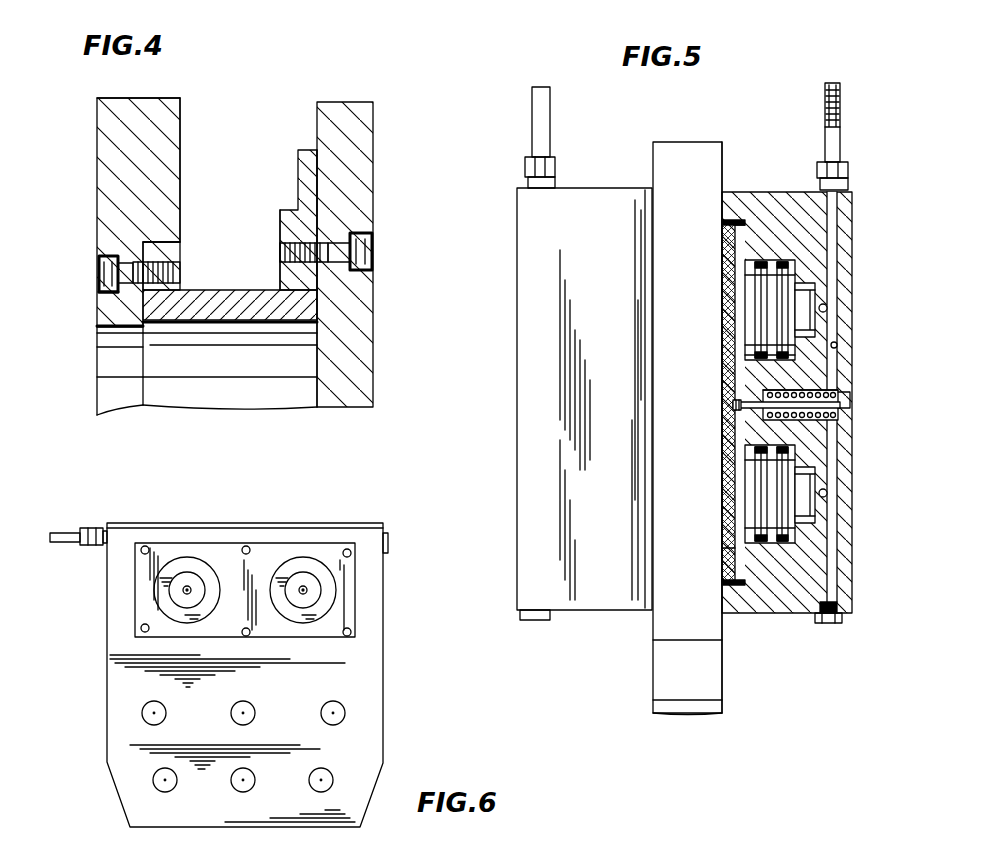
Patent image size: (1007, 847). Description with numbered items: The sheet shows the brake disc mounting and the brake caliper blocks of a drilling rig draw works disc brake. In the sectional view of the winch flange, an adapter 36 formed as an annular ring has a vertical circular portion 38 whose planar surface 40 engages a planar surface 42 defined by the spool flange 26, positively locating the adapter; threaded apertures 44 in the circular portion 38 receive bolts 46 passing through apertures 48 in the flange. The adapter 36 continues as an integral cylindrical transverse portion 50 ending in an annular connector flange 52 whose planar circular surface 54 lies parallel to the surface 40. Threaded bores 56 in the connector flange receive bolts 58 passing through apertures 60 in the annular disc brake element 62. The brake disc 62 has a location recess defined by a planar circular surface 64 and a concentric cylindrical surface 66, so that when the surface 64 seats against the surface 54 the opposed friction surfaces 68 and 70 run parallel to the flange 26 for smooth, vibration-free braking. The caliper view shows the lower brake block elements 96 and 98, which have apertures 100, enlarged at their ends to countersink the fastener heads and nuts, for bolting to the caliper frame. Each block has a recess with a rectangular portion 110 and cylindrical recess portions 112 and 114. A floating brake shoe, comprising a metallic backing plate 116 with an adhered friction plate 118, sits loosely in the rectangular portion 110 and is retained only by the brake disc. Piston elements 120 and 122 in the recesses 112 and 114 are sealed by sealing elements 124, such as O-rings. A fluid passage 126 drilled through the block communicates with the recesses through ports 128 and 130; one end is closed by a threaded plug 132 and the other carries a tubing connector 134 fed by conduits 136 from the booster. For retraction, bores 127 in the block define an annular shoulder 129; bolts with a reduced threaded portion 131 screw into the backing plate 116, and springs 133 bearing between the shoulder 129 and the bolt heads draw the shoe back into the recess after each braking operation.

In FIG. 4, the flange 26 is at (373, 110).
In FIG. 4, the adapter 36 is at (278, 195).
In FIG. 5, the adapter 36 is at (550, 117).
In FIG. 4, the circular portion 38 is at (307, 150).
In FIG. 4, the planar surface 40 is at (317, 187).
In FIG. 4, the planar surface 42 is at (310, 355).
In FIG. 4, the threaded apertures 44 is at (290, 267).
In FIG. 4, the bolts 46 is at (360, 250).
In FIG. 4, the apertures 48 is at (330, 235).
In FIG. 4, the transverse portion 50 is at (243, 313).
In FIG. 4, the connector flange 52 is at (168, 255).
In FIG. 4, the circular surface 54 is at (143, 303).
In FIG. 4, the threaded bores 56 is at (150, 300).
In FIG. 4, the bolts 58 is at (110, 267).
In FIG. 4, the apertures 60 is at (102, 285).
In FIG. 4, the disc brake element 62 is at (113, 137).
In FIG. 5, the disc brake element 62 is at (685, 703).
In FIG. 4, the planar circular surface 64 is at (172, 323).
In FIG. 4, the cylindrical surface 66 is at (143, 250).
In FIG. 4, the friction surface 68 is at (97, 113).
In FIG. 5, the friction surface 68 is at (648, 667).
In FIG. 4, the friction surface 70 is at (182, 110).
In FIG. 5, the friction surface 70 is at (718, 685).
In FIG. 5, the brake block element 96 is at (517, 413).
In FIG. 5, the brake block element 98 is at (845, 468).
In FIG. 6, the brake block element 98 is at (372, 722).
In FIG. 6, the apertures 100 is at (160, 782).
In FIG. 5, the rectangular portion 110 is at (722, 228).
In FIG. 6, the rectangular portion 110 is at (212, 545).
In FIG. 5, the cylindrical recess portion 112 is at (770, 362).
In FIG. 6, the cylindrical recess portion 112 is at (157, 597).
In FIG. 5, the cylindrical recess portion 114 is at (768, 545).
In FIG. 6, the cylindrical recess portion 114 is at (330, 598).
In FIG. 5, the backing plate 116 is at (740, 220).
In FIG. 5, the friction plate 118 is at (722, 548).
In FIG. 5, the piston element 120 is at (795, 273).
In FIG. 5, the piston element 122 is at (790, 547).
In FIG. 5, the sealing elements 124 is at (779, 262).
In FIG. 5, the fluid passage 126 is at (838, 345).
In FIG. 5, the bores 127 is at (852, 400).
In FIG. 6, the bores 127 is at (250, 545).
In FIG. 5, the port 128 is at (827, 308).
In FIG. 5, the annular shoulder 129 is at (763, 412).
In FIG. 5, the port 130 is at (827, 497).
In FIG. 5, the threaded portion 131 is at (733, 405).
In FIG. 5, the threaded plug 132 is at (828, 625).
In FIG. 6, the threaded plug 132 is at (388, 548).
In FIG. 5, the springs 133 is at (800, 386).
In FIG. 5, the tubing connector 134 is at (843, 177).
In FIG. 6, the tubing connector 134 is at (90, 525).
In FIG. 5, the conduits 136 is at (840, 87).